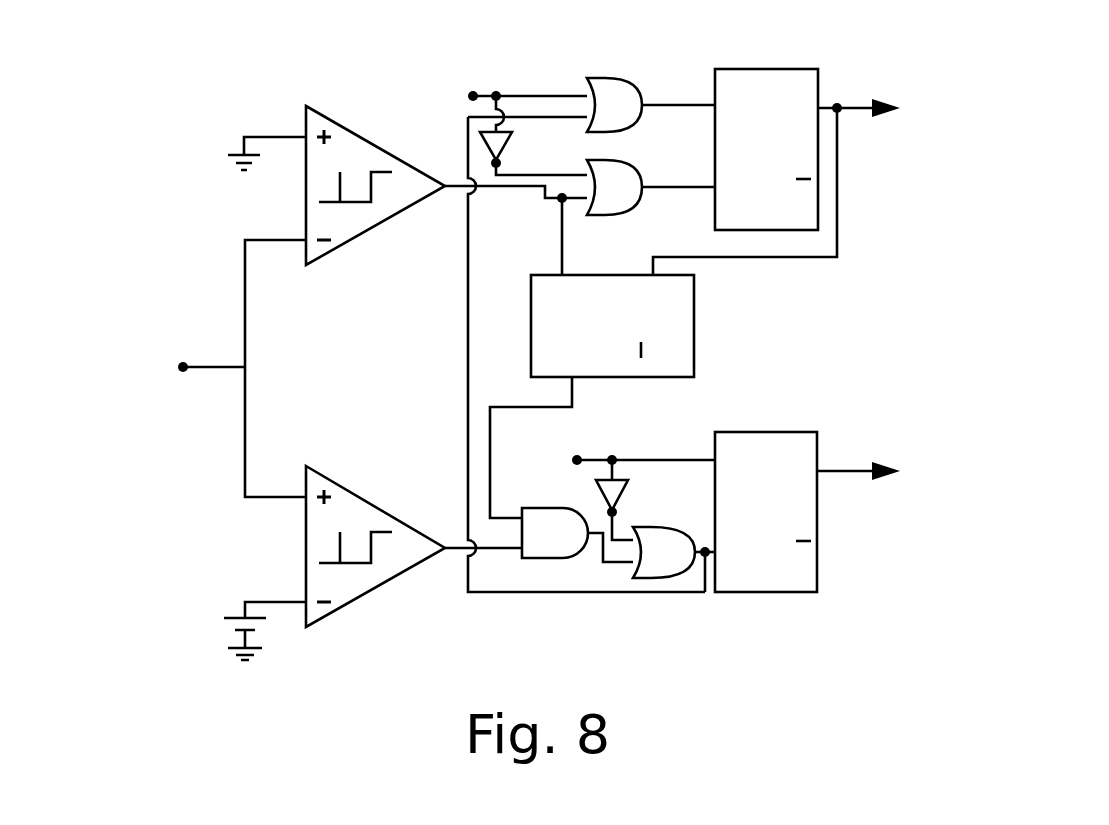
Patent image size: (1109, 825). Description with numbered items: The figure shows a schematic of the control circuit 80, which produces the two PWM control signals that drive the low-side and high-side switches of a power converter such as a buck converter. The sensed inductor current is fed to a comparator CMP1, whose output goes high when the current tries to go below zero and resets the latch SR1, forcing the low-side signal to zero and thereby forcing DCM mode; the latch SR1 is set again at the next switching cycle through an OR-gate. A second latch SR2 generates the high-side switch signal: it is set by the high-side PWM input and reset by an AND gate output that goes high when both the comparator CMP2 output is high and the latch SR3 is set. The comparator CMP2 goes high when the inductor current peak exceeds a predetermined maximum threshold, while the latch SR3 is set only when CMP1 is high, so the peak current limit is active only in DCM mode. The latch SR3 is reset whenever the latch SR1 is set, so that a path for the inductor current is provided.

The control circuit 80 is at (364, 52).
The comparator CMP1 is at (375, 192).
The comparator CMP2 is at (375, 541).
The latch SR1 is at (766, 149).
The latch SR2 is at (766, 512).
The latch SR3 is at (612, 326).